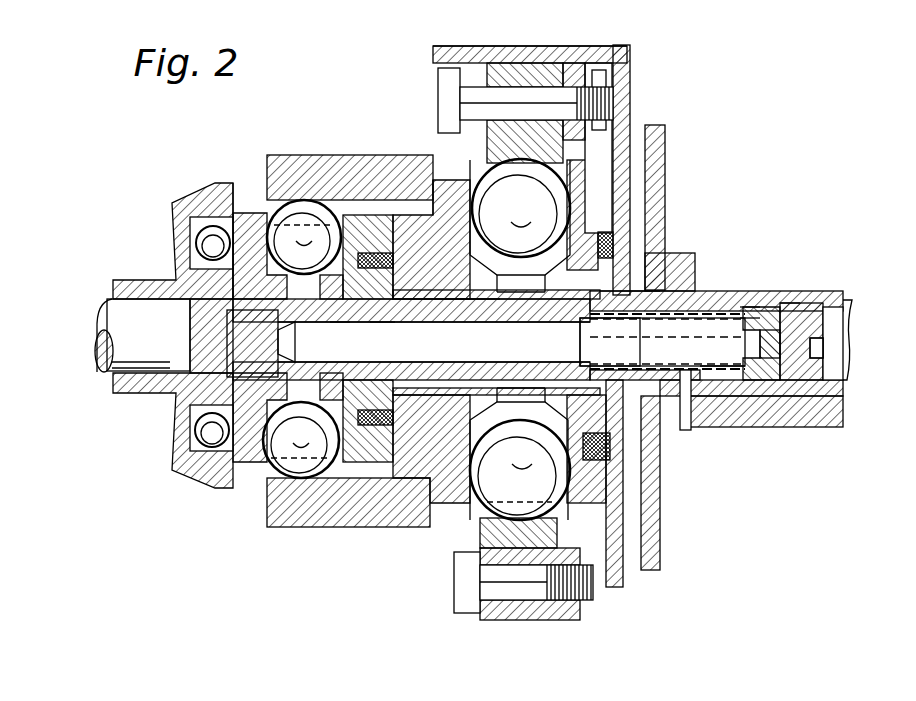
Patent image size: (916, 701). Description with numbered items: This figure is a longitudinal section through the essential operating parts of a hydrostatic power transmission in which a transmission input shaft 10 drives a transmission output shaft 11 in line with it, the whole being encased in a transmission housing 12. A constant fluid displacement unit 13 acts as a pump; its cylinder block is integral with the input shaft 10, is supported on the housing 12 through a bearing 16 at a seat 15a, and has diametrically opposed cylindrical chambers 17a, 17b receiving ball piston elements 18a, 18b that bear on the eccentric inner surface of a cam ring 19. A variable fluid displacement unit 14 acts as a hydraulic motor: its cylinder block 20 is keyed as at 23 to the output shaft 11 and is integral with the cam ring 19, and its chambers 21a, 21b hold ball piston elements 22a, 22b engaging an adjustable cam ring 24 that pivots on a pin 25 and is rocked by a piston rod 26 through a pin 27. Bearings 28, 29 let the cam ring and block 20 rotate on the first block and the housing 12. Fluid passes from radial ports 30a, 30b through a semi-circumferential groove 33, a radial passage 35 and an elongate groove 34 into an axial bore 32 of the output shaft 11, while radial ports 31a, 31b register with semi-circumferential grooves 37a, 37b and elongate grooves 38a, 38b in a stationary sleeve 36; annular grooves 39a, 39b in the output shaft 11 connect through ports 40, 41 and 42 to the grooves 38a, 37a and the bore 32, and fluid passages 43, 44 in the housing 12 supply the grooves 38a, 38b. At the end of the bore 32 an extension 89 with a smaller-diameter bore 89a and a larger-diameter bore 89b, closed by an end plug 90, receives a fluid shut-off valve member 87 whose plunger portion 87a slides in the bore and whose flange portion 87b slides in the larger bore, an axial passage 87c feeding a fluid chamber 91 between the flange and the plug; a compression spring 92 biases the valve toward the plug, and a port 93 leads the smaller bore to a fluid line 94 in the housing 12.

The transmission input shaft 10 is at (160, 299).
The transmission output shaft 11 is at (838, 400).
The transmission housing 12 is at (168, 392).
The constant fluid displacement unit 13 is at (362, 110).
The variable fluid displacement unit 14 is at (412, 110).
The bearing seat 15a is at (235, 213).
The bearing 16 is at (205, 228).
The cylindrical chamber 17a is at (365, 215).
The cylindrical chamber 17b is at (262, 466).
The ball piston element 18a is at (285, 205).
The ball piston element 18b is at (301, 479).
The cam ring 19 is at (320, 155).
The cylinder block 20 is at (433, 505).
The cylindrical chamber 21a is at (485, 195).
The cylindrical chamber 21b is at (520, 454).
The ball piston element 22a is at (567, 180).
The ball piston element 22b is at (573, 503).
The key 23 is at (413, 292).
The adjustable cam ring 24 is at (478, 548).
The pin 25 is at (540, 90).
The piston rod 26 is at (580, 612).
The pin 27 is at (490, 582).
The bearing 28 is at (432, 215).
The bearing 29 is at (655, 455).
The radial port 30a is at (283, 299).
The radial port 30b is at (278, 380).
The radial port 31a is at (413, 290).
The radial port 31b is at (468, 426).
The axial bore 32 is at (418, 354).
The semi-circumferential groove 33 is at (305, 322).
The elongate groove 34 is at (381, 318).
The radial passage 35 is at (338, 322).
The sleeve 36 is at (705, 291).
The semi-circumferential groove 37a is at (540, 300).
The semi-circumferential groove 37b is at (520, 402).
The elongate groove 38a is at (650, 253).
The elongate groove 38b is at (652, 432).
The annular groove 39a is at (553, 297).
The annular groove 39b is at (470, 307).
The port 40 is at (650, 285).
The port 41 is at (590, 331).
The port 42 is at (438, 390).
The fluid passage 43 is at (640, 132).
The fluid passage 44 is at (628, 555).
The fluid shut-off valve member 87 is at (770, 396).
The plunger portion 87a is at (722, 396).
The flange portion 87b is at (790, 303).
The axial passage 87c is at (748, 291).
The extension 89 is at (590, 342).
The smaller-diameter bore 89a is at (852, 305).
The larger-diameter bore 89b is at (745, 291).
The end plug 90 is at (845, 380).
The fluid chamber 91 is at (823, 345).
The compression spring 92 is at (800, 396).
The port 93 is at (742, 380).
The fluid line 94 is at (691, 412).